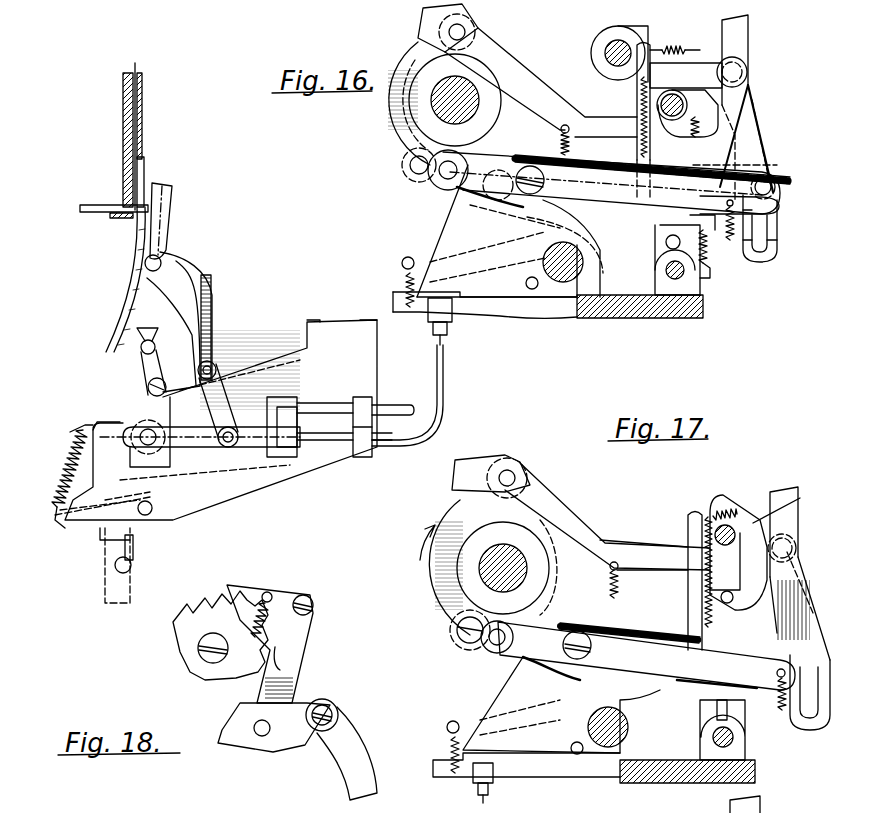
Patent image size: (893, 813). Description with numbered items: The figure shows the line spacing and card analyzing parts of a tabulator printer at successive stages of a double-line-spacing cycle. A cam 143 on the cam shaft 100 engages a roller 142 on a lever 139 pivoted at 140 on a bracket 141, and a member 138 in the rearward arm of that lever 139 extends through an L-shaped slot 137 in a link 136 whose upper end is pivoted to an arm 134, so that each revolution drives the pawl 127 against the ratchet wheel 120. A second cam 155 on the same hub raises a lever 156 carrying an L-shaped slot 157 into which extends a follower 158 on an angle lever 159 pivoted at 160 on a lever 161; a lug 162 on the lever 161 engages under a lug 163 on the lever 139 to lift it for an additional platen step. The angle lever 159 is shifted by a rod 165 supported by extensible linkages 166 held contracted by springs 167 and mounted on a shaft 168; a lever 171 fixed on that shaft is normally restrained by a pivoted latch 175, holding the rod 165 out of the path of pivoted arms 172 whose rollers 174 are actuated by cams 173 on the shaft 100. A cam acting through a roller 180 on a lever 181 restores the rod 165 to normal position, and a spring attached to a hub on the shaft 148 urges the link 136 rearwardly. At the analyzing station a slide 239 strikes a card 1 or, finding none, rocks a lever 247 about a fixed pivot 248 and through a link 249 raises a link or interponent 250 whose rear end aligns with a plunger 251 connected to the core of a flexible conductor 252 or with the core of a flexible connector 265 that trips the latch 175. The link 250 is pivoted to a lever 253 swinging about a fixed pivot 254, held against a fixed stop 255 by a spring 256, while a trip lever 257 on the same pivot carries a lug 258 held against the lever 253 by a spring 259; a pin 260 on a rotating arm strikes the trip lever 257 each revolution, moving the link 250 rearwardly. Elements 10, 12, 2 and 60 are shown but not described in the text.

In FIG. 16, the card 1 is at (137, 66).
In FIG. 16, the needle bar 10 is at (138, 118).
In FIG. 16, the slide 239 is at (88, 213).
In FIG. 16, the clamp 12 is at (118, 220).
In FIG. 16, the lever 247 is at (163, 222).
In FIG. 16, the fixed pivot 248 is at (167, 260).
In FIG. 16, the frame 2 is at (218, 420).
In FIG. 16, the link 249 is at (173, 362).
In FIG. 16, the lever 253 is at (112, 430).
In FIG. 16, the link or interponent 250 is at (247, 442).
In FIG. 16, the spring 256 is at (80, 458).
In FIG. 16, the fixed stop 255 is at (87, 478).
In FIG. 16, the spring 259 is at (58, 515).
In FIG. 16, the fixed pivot 254 is at (147, 514).
In FIG. 16, the lug 258 is at (133, 545).
In FIG. 16, the trip lever 257 is at (107, 553).
In FIG. 16, the lug or pin 260 is at (132, 570).
In FIG. 16, the plunger 251 is at (287, 410).
In FIG. 16, the flexible conductor 252 is at (425, 400).
In FIG. 16, the flexible connector 265 is at (446, 400).
In FIG. 17, the flexible connector 265 is at (490, 790).
In FIG. 16, the shaft 100 is at (470, 93).
In FIG. 17, the shaft 100 is at (483, 587).
In FIG. 16, the second cam 155 is at (380, 128).
In FIG. 17, the second cam 155 is at (543, 530).
In FIG. 16, the cam 143 is at (488, 55).
In FIG. 17, the cam 143 is at (550, 613).
In FIG. 16, the roller 180 is at (408, 174).
In FIG. 17, the roller 180 is at (460, 640).
In FIG. 16, the pivot 140 is at (515, 163).
In FIG. 16, the L-shaped slot 137 is at (630, 158).
In FIG. 17, the L-shaped slot 137 is at (697, 627).
In FIG. 16, the roller 142 is at (445, 190).
In FIG. 17, the roller 142 is at (495, 652).
In FIG. 16, the rod 165 is at (683, 97).
In FIG. 17, the rod 165 is at (753, 527).
In FIG. 16, the shaft 60 is at (745, 72).
In FIG. 16, the extensible linkages 166 is at (700, 103).
In FIG. 16, the link 136 is at (737, 117).
In FIG. 17, the link 136 is at (790, 527).
In FIG. 18, the link 136 is at (360, 765).
In FIG. 16, the lever 161 is at (773, 133).
In FIG. 17, the lever 161 is at (803, 589).
In FIG. 16, the angle lever 159 is at (757, 152).
In FIG. 17, the angle lever 159 is at (795, 498).
In FIG. 16, the member 138 is at (777, 167).
In FIG. 17, the member 138 is at (820, 598).
In FIG. 16, the projection or follower 158 is at (777, 185).
In FIG. 16, the lug 163 is at (777, 202).
In FIG. 16, the lever 139 is at (745, 215).
In FIG. 16, the L-shaped slot 157 is at (778, 232).
In FIG. 17, the L-shaped slot 157 is at (812, 728).
In FIG. 16, the lever 156 is at (778, 248).
In FIG. 16, the lug 162 is at (710, 238).
In FIG. 16, the springs 167 is at (707, 258).
In FIG. 16, the shaft 168 is at (688, 275).
In FIG. 17, the shaft 168 is at (733, 742).
In FIG. 16, the pivoted latch 175 is at (555, 300).
In FIG. 17, the pivoted latch 175 is at (606, 765).
In FIG. 16, the lever 181 is at (627, 273).
In FIG. 17, the rollers or followers 174 is at (527, 462).
In FIG. 17, the pivoted arms 172 is at (645, 563).
In FIG. 17, the cams 173 is at (455, 520).
In FIG. 17, the pivot 160 is at (796, 548).
In FIG. 17, the lever 171 is at (480, 718).
In FIG. 17, the bracket 141 is at (660, 745).
In FIG. 17, the shaft 148 is at (805, 812).
In FIG. 18, the ratchet wheel 120 is at (187, 660).
In FIG. 18, the driving pawl 127 is at (287, 647).
In FIG. 18, the arm 134 is at (298, 737).